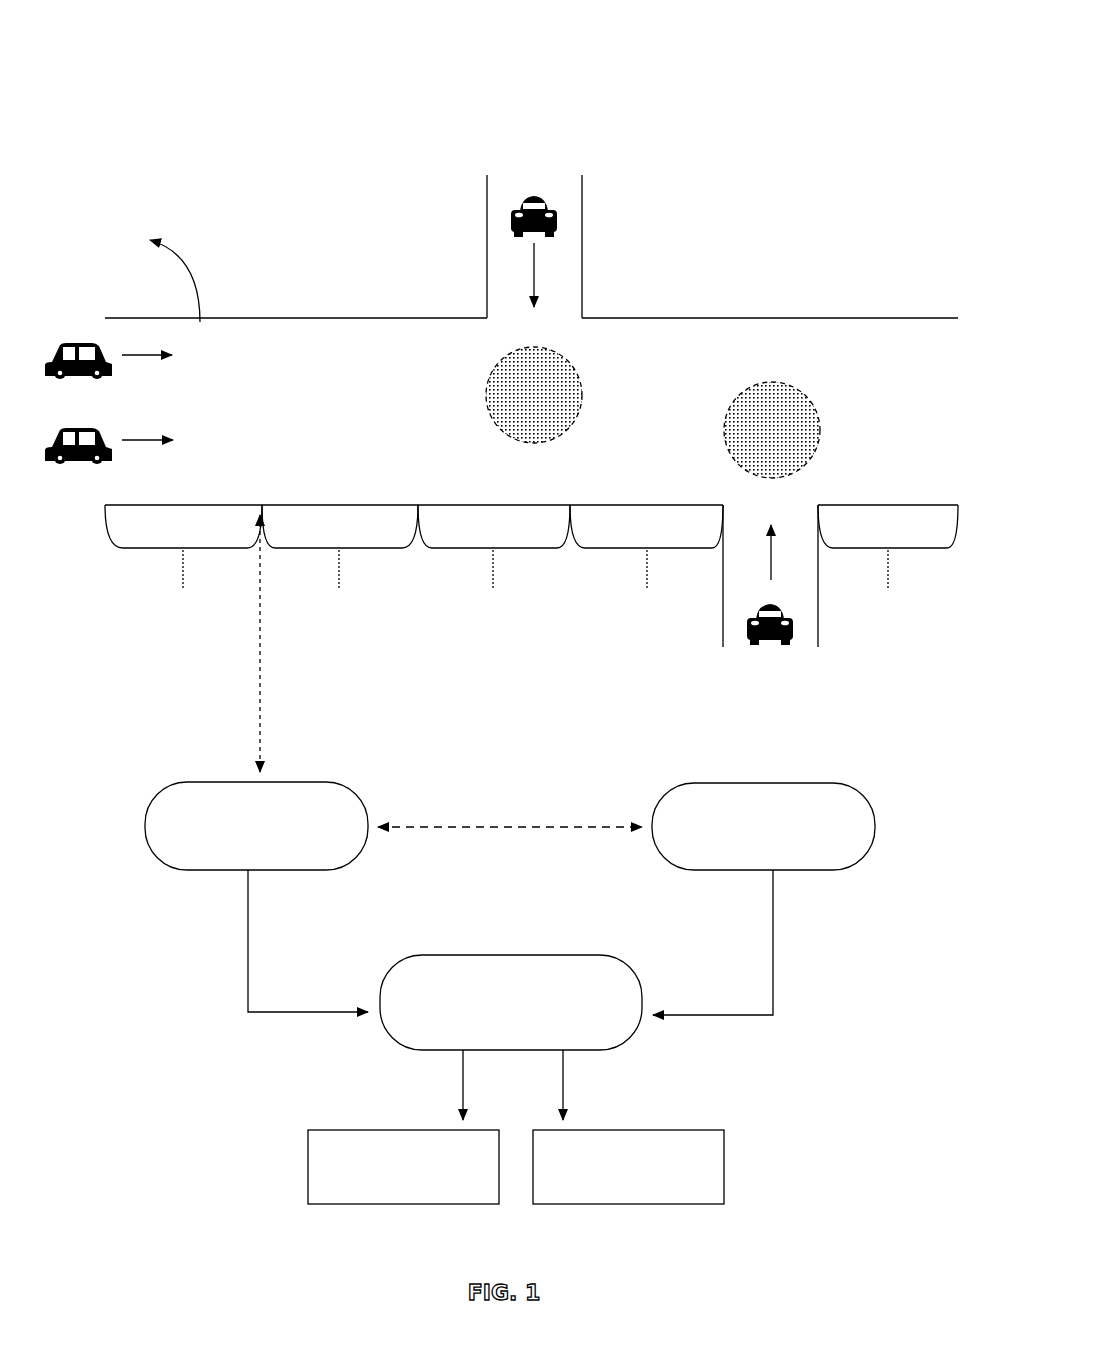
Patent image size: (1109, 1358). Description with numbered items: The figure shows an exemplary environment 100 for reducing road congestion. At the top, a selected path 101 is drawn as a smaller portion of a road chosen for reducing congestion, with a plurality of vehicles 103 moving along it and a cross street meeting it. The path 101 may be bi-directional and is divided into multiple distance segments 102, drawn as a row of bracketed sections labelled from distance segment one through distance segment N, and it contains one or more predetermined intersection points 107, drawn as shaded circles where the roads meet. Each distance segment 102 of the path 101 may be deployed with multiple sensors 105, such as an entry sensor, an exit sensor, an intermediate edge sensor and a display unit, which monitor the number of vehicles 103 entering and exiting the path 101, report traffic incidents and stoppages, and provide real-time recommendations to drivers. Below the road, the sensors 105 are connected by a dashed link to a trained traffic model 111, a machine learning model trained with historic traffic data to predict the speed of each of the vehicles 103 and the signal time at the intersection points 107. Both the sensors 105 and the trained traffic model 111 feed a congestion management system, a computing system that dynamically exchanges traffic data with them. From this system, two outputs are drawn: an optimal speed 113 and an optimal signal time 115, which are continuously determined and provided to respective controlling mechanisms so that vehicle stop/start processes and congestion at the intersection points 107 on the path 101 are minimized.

The environment 100 is at (726, 47).
The selected path 101 is at (150, 269).
The distance segments 102 is at (530, 593).
The vehicles 103 is at (832, 687).
The sensors 105 is at (256, 763).
The predetermined intersection points 107 is at (576, 355).
The trained traffic model 111 is at (626, 899).
The optimal speed 113 is at (403, 1127).
The optimal signal time 115 is at (628, 1127).